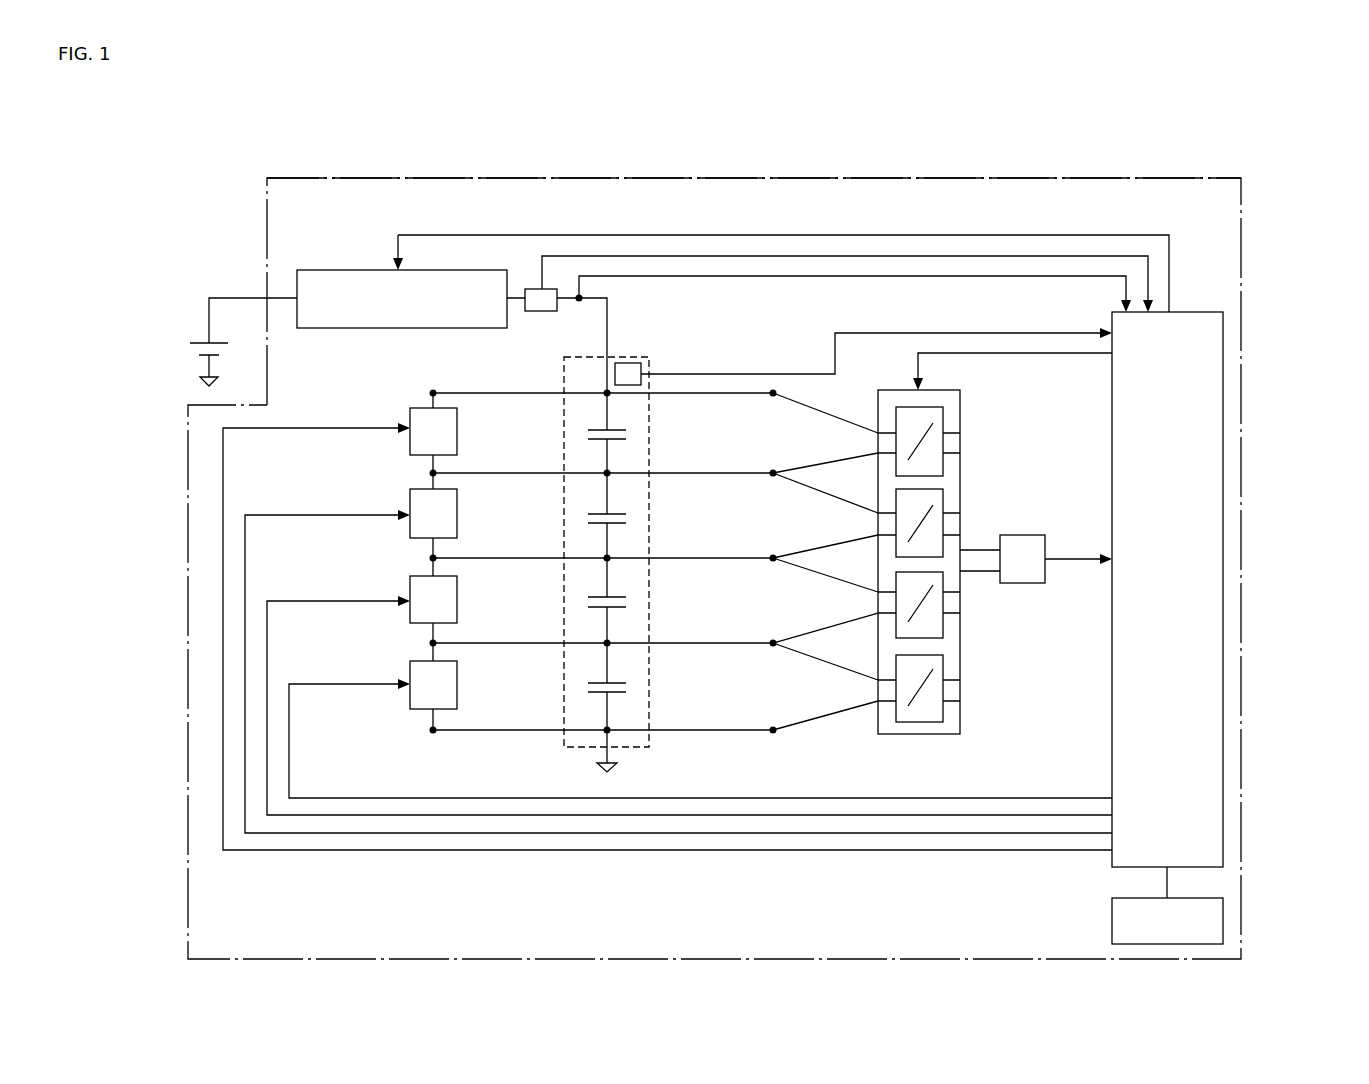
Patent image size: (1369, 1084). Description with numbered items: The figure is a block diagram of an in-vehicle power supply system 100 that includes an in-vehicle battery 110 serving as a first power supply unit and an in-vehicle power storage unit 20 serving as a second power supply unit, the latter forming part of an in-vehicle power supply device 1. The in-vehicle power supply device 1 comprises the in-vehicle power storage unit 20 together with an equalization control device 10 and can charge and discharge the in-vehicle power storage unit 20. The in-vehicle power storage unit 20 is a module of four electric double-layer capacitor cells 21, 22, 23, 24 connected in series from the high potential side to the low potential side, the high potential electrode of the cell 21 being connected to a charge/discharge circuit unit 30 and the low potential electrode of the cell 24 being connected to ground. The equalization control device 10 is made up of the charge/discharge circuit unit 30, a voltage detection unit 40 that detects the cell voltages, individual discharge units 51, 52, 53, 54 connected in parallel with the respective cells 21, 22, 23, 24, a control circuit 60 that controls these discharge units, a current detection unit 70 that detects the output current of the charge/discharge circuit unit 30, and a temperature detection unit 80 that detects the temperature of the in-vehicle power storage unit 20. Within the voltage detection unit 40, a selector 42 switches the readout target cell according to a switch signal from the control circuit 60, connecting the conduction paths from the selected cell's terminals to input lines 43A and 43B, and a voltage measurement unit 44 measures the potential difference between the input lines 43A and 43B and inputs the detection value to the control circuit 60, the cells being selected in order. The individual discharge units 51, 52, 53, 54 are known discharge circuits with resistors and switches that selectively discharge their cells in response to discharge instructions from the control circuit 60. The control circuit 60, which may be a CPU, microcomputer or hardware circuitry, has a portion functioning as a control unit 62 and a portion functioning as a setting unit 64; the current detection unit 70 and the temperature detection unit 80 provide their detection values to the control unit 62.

The in-vehicle power supply device 1 is at (1055, 178).
The in-vehicle power supply system 100 is at (471, 166).
The equalization control device 10 is at (1008, 204).
The in-vehicle power storage unit 20 is at (622, 357).
The cell 21 is at (592, 429).
The cell 22 is at (592, 513).
The cell 23 is at (592, 597).
The cell 24 is at (592, 682).
The charge/discharge circuit unit 30 is at (341, 270).
The voltage detection unit 40 is at (995, 543).
The selector 42 is at (960, 720).
The input line 43A is at (980, 548).
The input line 43B is at (980, 575).
The voltage measurement unit 44 is at (1018, 535).
The individual discharge unit 51 is at (410, 413).
The individual discharge unit 52 is at (410, 496).
The individual discharge unit 53 is at (410, 582).
The individual discharge unit 54 is at (410, 667).
The control circuit 60 is at (1227, 628).
The control unit 62 is at (1223, 790).
The setting unit 64 is at (1204, 916).
The current detection unit 70 is at (542, 311).
The temperature detection unit 80 is at (636, 363).
The in-vehicle battery 110 is at (200, 338).